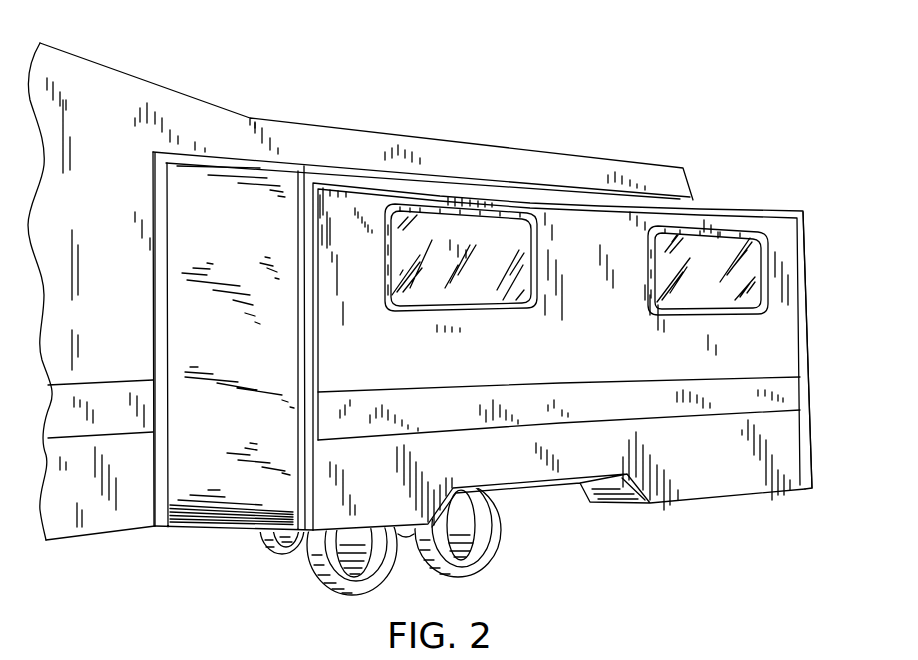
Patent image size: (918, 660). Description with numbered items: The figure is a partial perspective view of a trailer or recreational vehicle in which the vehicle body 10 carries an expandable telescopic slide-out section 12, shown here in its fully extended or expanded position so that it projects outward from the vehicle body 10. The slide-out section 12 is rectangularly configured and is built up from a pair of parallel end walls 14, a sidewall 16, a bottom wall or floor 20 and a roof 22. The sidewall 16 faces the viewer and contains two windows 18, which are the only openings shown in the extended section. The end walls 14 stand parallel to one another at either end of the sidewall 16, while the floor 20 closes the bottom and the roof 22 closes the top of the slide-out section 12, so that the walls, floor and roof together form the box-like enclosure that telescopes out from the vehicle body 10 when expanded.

The vehicle body 10 is at (497, 316).
The expandable telescopic slide-out section 12 is at (768, 202).
The end walls 14 is at (233, 478).
The sidewall 16 is at (600, 405).
The windows 18 is at (531, 311).
The bottom wall or floor 20 is at (707, 500).
The roof 22 is at (400, 172).